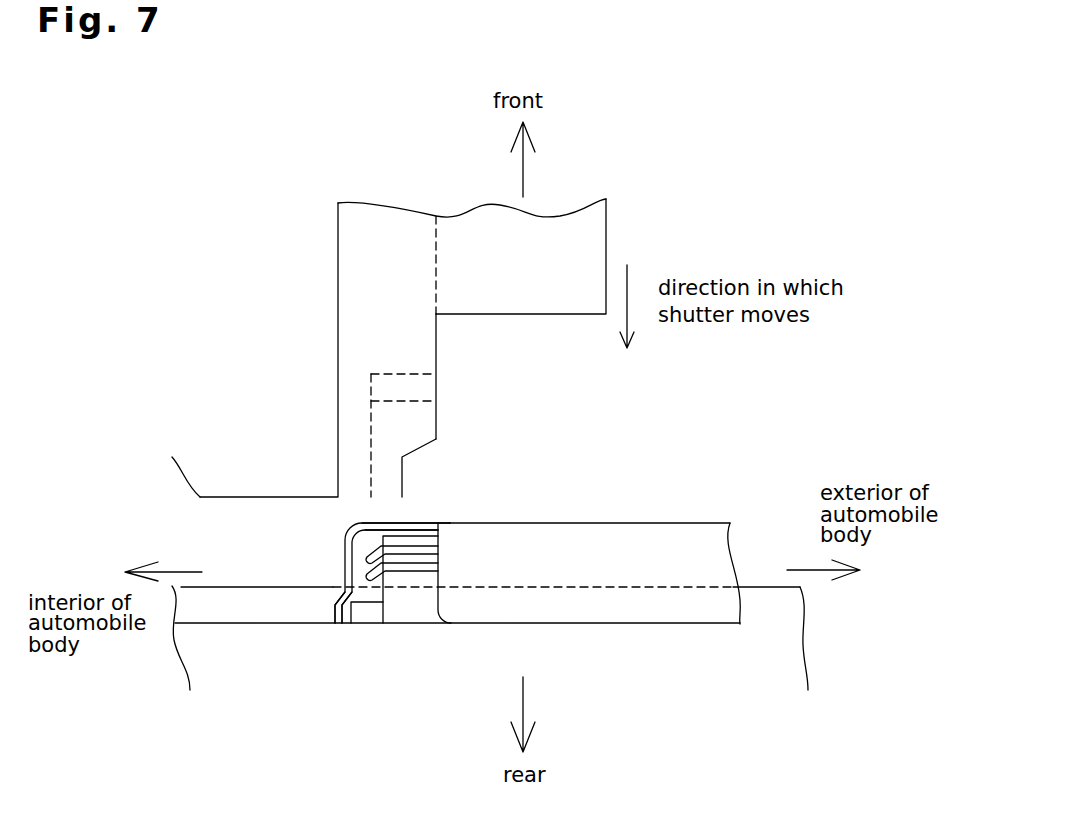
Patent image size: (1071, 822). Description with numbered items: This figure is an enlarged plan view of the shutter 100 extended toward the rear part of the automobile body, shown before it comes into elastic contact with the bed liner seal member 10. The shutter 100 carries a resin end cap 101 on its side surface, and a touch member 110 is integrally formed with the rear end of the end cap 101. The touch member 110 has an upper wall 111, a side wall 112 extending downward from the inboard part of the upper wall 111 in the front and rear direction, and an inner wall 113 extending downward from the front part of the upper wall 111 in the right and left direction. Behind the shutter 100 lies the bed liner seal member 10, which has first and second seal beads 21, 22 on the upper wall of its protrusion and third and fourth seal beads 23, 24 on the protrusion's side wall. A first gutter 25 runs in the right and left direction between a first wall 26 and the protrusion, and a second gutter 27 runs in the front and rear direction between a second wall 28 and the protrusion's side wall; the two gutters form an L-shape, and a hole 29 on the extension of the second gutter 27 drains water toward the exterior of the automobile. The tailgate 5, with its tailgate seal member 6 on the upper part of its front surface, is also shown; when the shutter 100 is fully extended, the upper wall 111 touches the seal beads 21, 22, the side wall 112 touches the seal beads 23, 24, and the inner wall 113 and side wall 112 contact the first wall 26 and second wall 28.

The tailgate 5 is at (818, 656).
The tailgate seal member 6 is at (235, 587).
The bed liner seal member 10 is at (645, 498).
The first seal bead 21 is at (423, 550).
The second seal bead 22 is at (403, 570).
The third seal bead 23 is at (345, 545).
The fourth seal bead 24 is at (366, 577).
The first gutter 25 is at (397, 528).
The first wall 26 is at (415, 523).
The second gutter 27 is at (366, 560).
The second wall 28 is at (340, 583).
The hole 29 is at (368, 618).
The shutter 100 is at (325, 243).
The end cap 101 is at (385, 243).
The touch member 110 is at (424, 469).
The upper wall 111 is at (437, 428).
The side wall 112 is at (355, 447).
The inner wall 113 is at (437, 392).